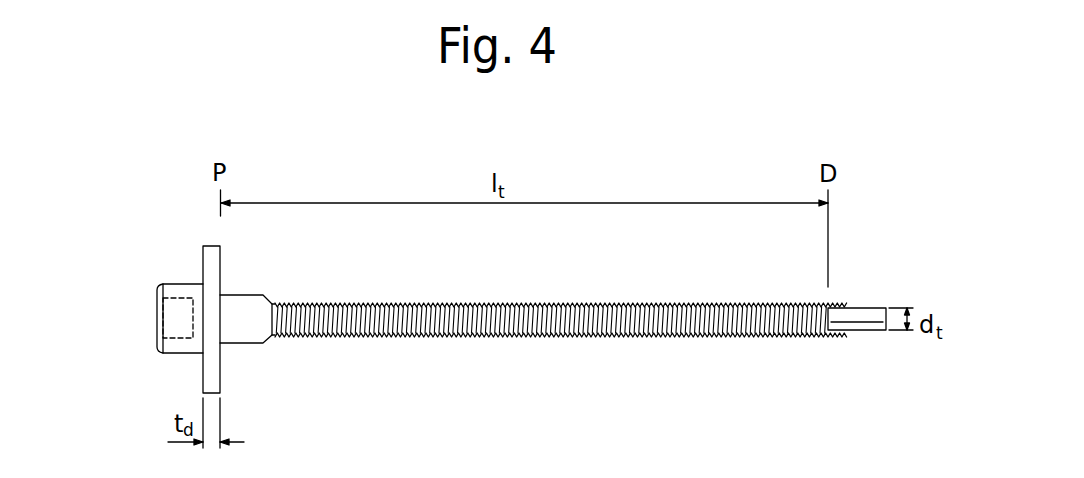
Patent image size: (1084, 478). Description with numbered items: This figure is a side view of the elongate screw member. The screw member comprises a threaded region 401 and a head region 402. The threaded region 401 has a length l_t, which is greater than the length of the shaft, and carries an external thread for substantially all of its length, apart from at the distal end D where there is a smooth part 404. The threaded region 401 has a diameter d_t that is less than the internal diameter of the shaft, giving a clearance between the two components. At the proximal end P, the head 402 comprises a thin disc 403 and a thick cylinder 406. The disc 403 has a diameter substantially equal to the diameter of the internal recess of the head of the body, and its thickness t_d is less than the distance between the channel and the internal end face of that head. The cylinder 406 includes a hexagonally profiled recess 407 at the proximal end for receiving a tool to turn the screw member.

The threaded region 401 is at (502, 337).
The head region 402 is at (187, 284).
The thin disc 403 is at (243, 395).
The smooth part 404 is at (865, 331).
The thick cylinder 406 is at (178, 353).
The hexagonally profiled recess 407 is at (178, 326).